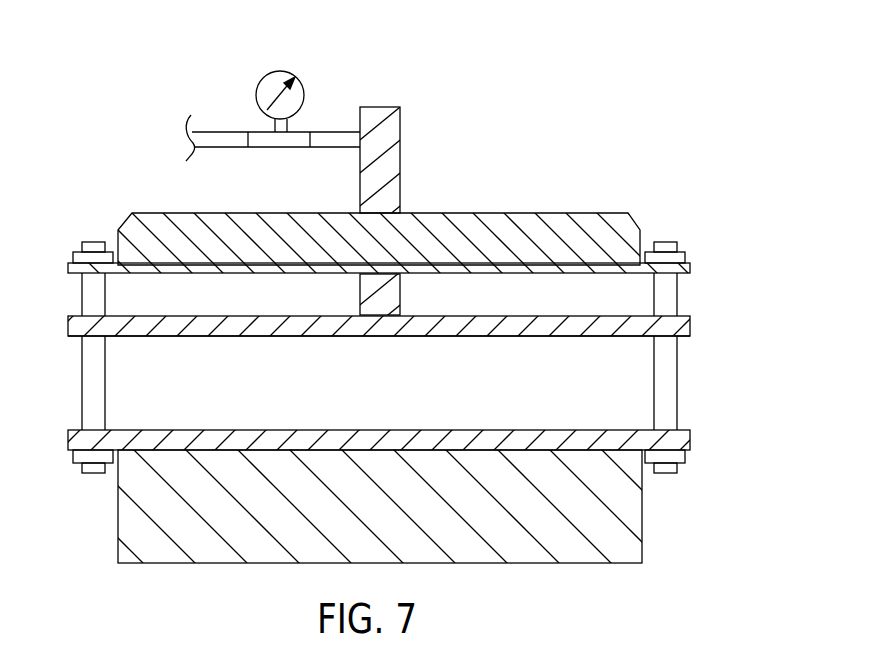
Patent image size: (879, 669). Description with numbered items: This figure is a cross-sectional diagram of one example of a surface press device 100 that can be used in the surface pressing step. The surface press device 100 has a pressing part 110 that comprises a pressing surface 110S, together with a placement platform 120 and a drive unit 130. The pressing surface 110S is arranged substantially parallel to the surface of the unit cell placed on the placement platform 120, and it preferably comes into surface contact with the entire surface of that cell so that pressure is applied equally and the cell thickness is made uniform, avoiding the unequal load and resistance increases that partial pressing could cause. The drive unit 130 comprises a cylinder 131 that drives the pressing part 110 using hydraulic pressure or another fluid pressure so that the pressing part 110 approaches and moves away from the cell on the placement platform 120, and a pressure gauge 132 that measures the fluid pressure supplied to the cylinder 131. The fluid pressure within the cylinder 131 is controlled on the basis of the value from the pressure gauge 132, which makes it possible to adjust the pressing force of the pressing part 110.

The surface press device 100 is at (103, 51).
The pressing part 110 is at (690, 321).
The pressing surface 110S is at (484, 337).
The placement platform 120 is at (690, 437).
The drive unit 130 is at (380, 101).
The cylinder 131 is at (390, 165).
The pressure gauge 132 is at (257, 92).